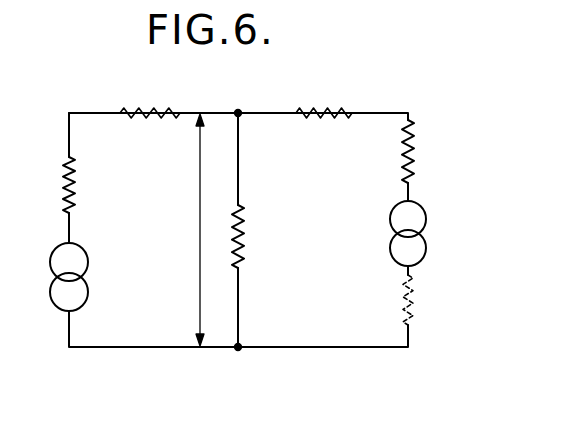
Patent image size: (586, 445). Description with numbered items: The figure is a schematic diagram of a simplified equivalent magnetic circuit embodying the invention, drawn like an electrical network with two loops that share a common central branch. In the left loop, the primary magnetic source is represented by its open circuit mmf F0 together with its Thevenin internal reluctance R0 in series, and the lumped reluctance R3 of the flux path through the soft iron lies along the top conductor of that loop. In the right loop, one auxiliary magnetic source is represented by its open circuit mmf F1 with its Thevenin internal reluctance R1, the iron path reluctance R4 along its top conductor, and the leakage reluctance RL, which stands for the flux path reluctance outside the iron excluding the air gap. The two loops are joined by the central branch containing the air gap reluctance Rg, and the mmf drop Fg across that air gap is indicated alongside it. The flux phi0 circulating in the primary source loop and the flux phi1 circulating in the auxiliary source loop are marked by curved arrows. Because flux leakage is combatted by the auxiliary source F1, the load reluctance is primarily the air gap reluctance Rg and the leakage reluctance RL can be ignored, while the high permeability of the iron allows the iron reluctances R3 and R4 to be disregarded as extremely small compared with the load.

The Thevenin internal reluctance of the primary source R0 is at (64, 174).
The lumped reluctance of the iron flux path R3 is at (142, 108).
The lumped reluctance of the iron flux path R4 is at (312, 109).
The Thevenin internal reluctance of the auxiliary source R1 is at (413, 146).
The air gap reluctance Rg is at (244, 232).
The leakage reluctance RL is at (404, 292).
The open circuit mmf of the primary source F0 is at (91, 281).
The open circuit mmf of the auxiliary source F1 is at (384, 236).
The mmf drop across air gap Fg is at (197, 237).
The flux in primary source loop phi0 is at (158, 146).
The flux in auxiliary source loop phi1 is at (297, 145).